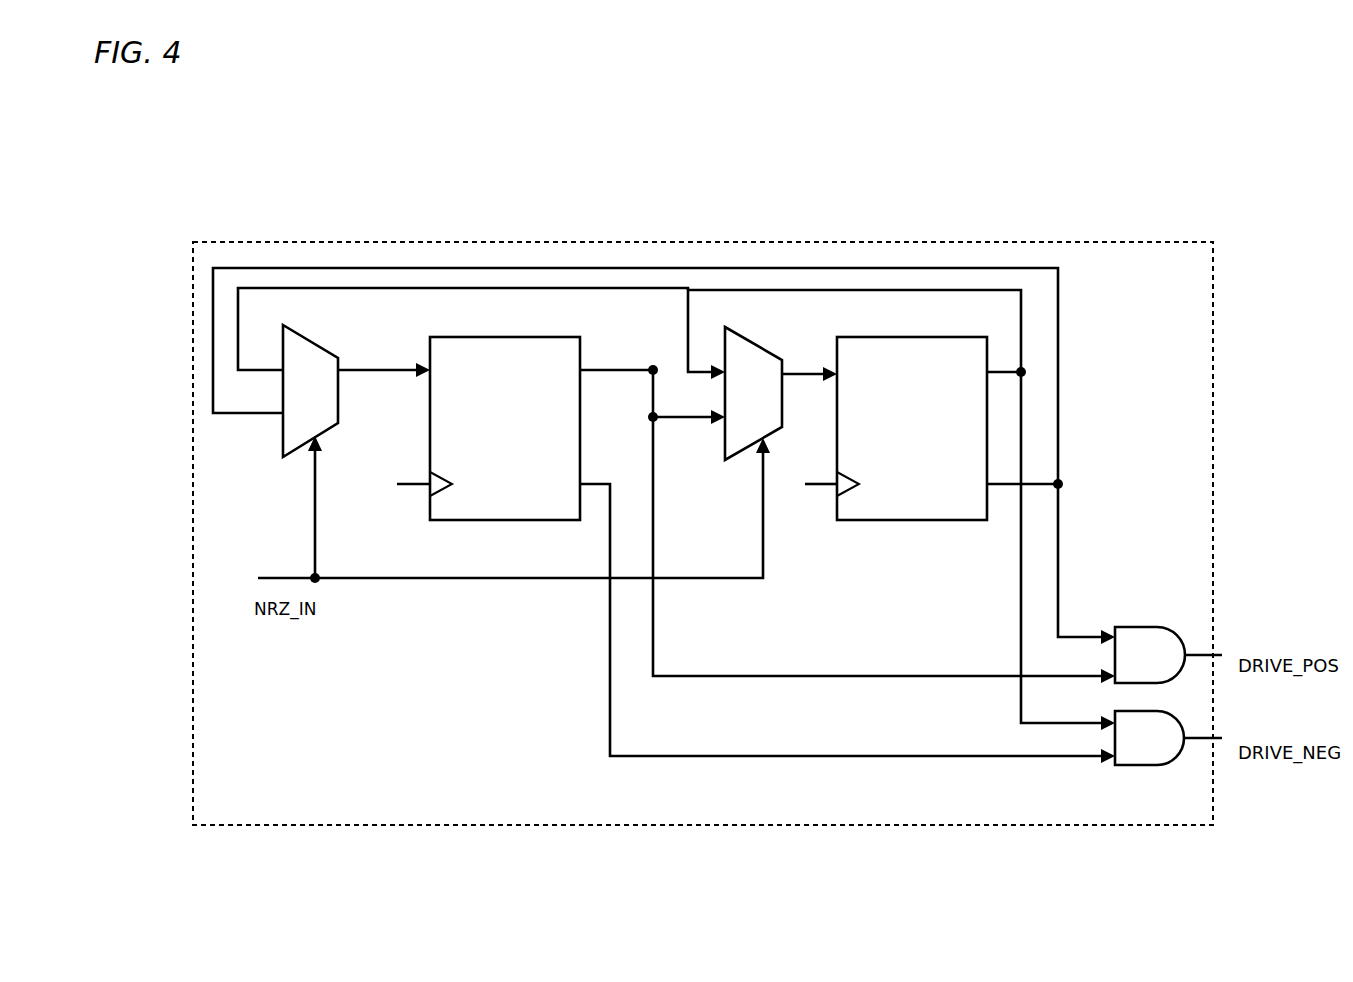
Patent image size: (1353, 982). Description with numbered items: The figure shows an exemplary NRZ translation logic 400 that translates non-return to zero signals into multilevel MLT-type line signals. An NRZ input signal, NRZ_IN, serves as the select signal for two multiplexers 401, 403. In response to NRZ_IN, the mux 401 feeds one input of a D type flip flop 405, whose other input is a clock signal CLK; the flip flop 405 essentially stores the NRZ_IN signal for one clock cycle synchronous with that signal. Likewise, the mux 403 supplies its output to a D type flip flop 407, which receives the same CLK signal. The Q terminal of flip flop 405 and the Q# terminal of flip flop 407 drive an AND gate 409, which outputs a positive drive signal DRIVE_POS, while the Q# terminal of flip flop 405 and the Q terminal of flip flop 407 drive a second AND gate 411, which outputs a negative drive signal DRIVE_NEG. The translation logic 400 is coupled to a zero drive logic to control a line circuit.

The NRZ translation logic 400 is at (692, 242).
The multiplexer 401 is at (333, 351).
The multiplexer 403 is at (763, 349).
The D type flip flop 405 is at (505, 521).
The D type flip flop 407 is at (913, 521).
The AND gate 409 is at (1178, 622).
The AND gate 411 is at (1153, 767).